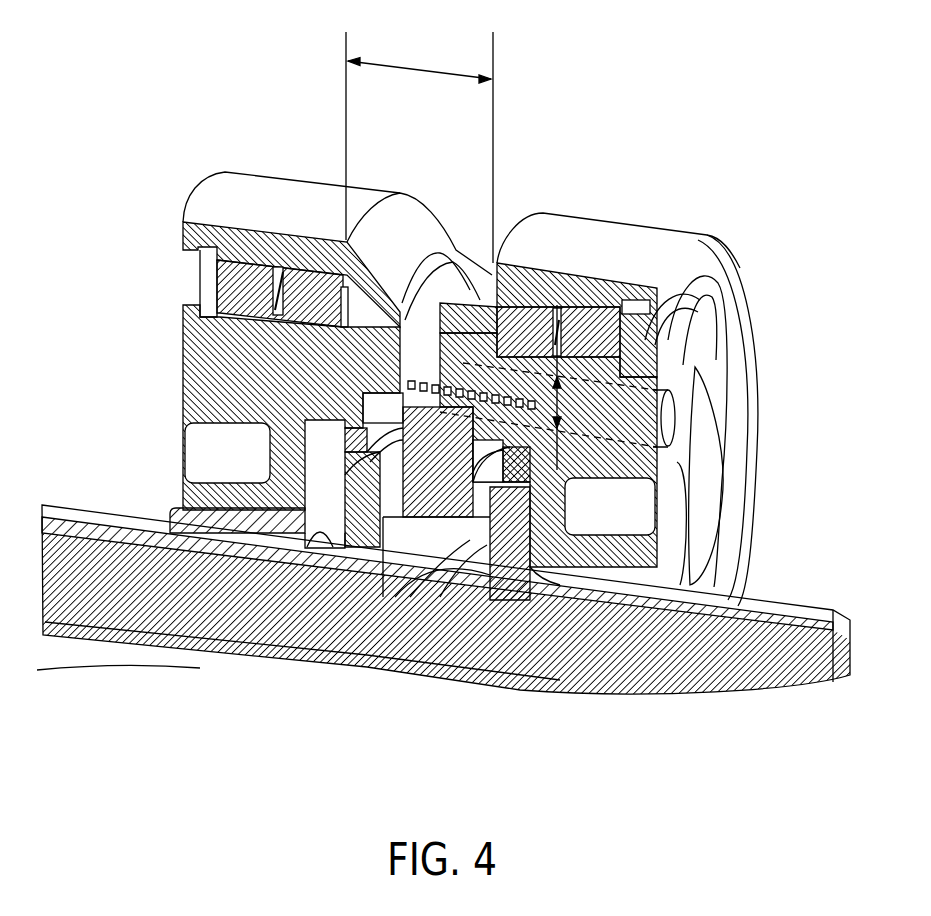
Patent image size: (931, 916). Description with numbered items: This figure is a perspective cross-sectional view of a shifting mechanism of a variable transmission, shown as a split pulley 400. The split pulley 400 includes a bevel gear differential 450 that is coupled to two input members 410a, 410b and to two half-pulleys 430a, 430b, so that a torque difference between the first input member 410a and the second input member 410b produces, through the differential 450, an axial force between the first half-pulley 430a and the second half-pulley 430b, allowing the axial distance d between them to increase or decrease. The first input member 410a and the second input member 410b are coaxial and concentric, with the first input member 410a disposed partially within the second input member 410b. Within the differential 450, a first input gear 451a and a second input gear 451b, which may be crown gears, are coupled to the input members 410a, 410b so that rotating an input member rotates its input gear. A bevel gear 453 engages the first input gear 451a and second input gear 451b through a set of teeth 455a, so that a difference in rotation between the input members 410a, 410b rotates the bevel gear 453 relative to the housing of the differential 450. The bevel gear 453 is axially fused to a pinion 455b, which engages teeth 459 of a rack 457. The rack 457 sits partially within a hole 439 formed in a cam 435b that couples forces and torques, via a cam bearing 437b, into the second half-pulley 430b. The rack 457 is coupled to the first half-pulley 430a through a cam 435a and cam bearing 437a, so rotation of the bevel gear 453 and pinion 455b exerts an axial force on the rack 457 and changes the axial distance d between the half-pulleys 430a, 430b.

The split pulley 400 is at (790, 168).
The first input member 410a is at (820, 630).
The second input member 410b is at (150, 650).
The first half-pulley 430a is at (270, 190).
The second half-pulley 430b is at (665, 240).
The cam 435a is at (193, 400).
The cam 435b is at (703, 363).
The cam bearing 437a is at (232, 292).
The cam bearing 437b is at (653, 293).
The hole 439 is at (688, 423).
The bevel gear differential 450 is at (513, 690).
The first input gear 451a is at (483, 529).
The second input gear 451b is at (374, 500).
The bevel gear 453 is at (430, 517).
The teeth 455a is at (466, 534).
The pinion 455b is at (393, 417).
The rack 457 is at (432, 375).
The teeth 459 is at (473, 368).
The axial distance d is at (419, 147).